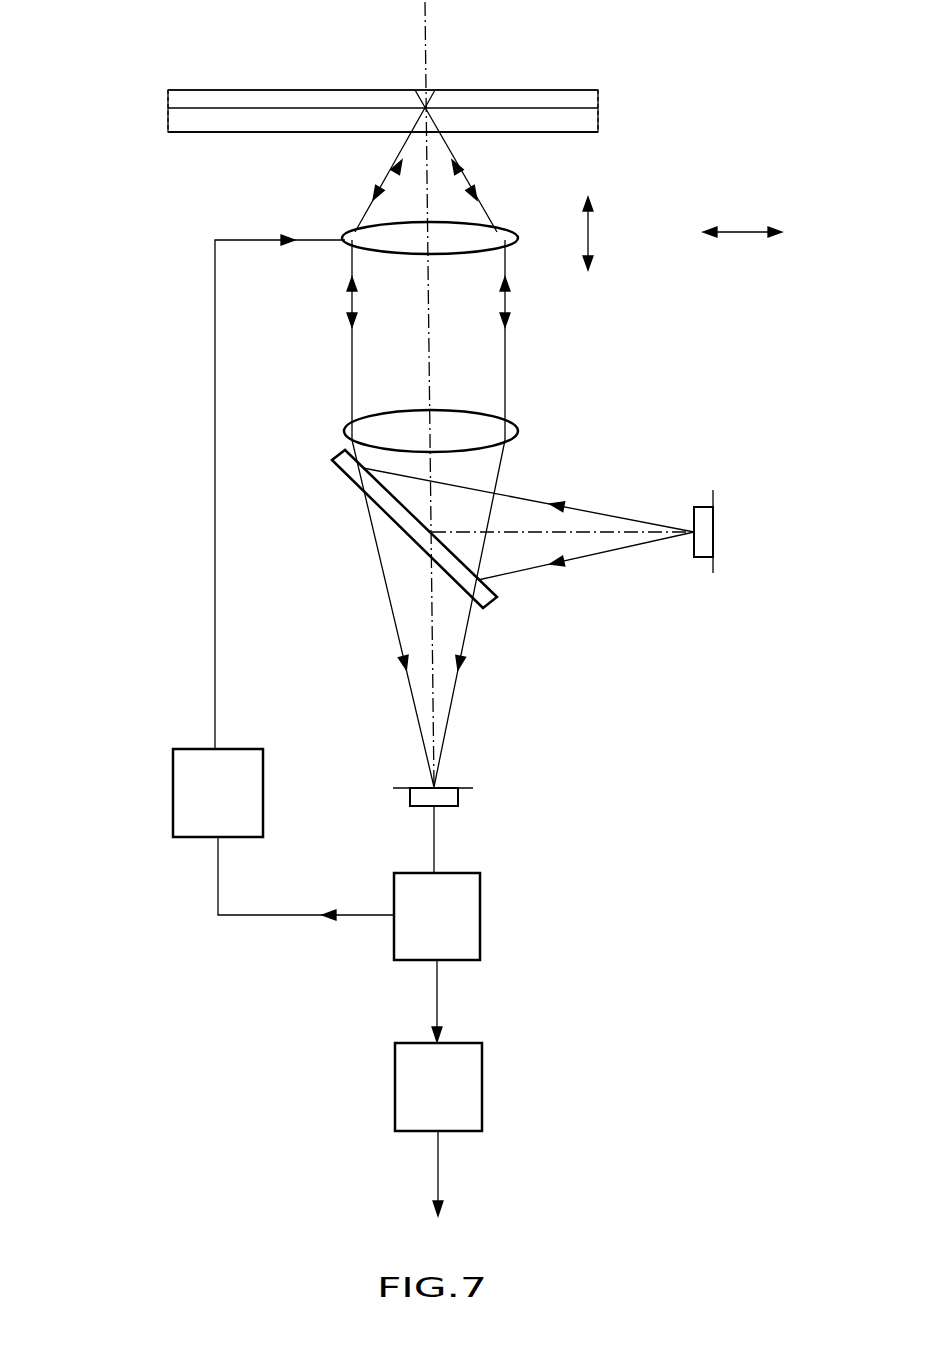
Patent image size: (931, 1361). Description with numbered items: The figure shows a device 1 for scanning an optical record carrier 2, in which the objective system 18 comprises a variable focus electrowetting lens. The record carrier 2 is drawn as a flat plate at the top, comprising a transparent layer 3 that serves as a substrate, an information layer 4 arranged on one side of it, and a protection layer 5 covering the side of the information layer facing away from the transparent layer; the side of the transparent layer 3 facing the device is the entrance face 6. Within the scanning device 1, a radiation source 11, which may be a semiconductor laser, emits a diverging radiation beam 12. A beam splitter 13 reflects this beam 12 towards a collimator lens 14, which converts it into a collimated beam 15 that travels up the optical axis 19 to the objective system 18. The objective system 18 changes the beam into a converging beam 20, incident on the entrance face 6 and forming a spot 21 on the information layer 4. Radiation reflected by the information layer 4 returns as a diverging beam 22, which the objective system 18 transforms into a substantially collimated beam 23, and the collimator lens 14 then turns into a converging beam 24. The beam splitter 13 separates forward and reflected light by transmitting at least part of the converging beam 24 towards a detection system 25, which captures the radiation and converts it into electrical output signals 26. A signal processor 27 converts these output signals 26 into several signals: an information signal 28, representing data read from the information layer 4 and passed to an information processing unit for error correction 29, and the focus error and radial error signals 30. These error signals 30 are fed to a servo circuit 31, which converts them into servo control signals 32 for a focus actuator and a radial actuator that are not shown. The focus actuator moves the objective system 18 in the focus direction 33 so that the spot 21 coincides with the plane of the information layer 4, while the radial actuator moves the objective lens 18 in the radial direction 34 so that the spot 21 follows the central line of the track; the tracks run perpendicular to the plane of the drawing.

The scanning device 1 is at (121, 506).
The optical record carrier 2 is at (104, 42).
The transparent layer 3 is at (182, 123).
The information layer 4 is at (221, 108).
The protection layer 5 is at (182, 102).
The entrance face 6 is at (203, 133).
The radiation source 11 is at (718, 522).
The radiation beam 12 is at (643, 522).
The beam splitter 13 is at (340, 473).
The collimator lens 14 is at (345, 432).
The collimated beam 15 is at (352, 366).
The objective system 18 is at (345, 240).
The optical axis 19 is at (427, 32).
The converging beam 20 is at (398, 162).
The spot 21 is at (425, 110).
The diverging beam 22 is at (480, 185).
The substantially collimated beam 23 is at (508, 318).
The converging beam 24 is at (500, 463).
The detection system 25 is at (460, 792).
The electrical output signals 26 is at (437, 843).
The signal processor 27 is at (480, 915).
The information signal 28 is at (440, 1004).
The information processing unit for error correction 29 is at (482, 1075).
The focus error signal and radial error signal 30 is at (270, 915).
The servo circuit 31 is at (173, 797).
The servo control signals 32 is at (215, 623).
The focus direction 33 is at (588, 229).
The radial direction 34 is at (744, 232).